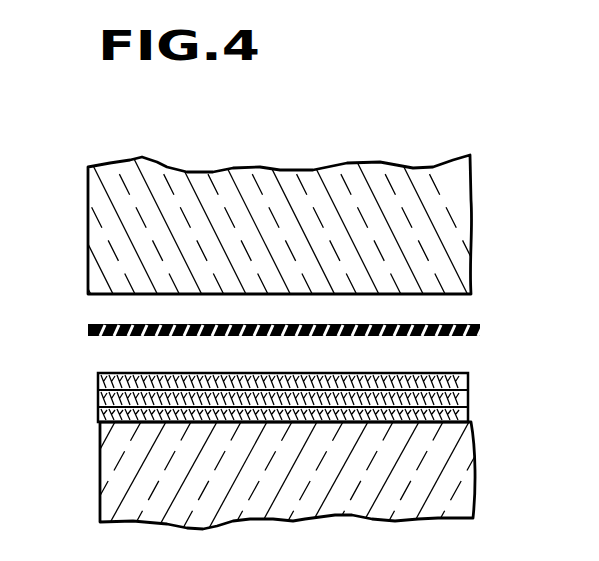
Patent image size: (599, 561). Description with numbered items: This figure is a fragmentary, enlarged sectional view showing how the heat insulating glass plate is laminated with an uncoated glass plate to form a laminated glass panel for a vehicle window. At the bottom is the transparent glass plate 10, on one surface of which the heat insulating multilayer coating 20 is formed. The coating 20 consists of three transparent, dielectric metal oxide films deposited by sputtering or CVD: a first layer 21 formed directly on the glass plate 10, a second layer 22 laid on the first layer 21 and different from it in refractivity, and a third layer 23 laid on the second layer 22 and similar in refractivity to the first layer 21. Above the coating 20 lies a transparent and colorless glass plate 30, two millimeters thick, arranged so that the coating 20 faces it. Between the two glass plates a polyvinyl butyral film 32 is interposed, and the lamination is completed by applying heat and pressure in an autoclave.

The glass plate 10 is at (100, 480).
The multilayer coating 20 is at (86, 399).
The first layer 21 is at (465, 412).
The second layer 22 is at (462, 396).
The third layer 23 is at (468, 378).
The glass plate 30 is at (92, 226).
The polyvinyl butyral film 32 is at (88, 330).